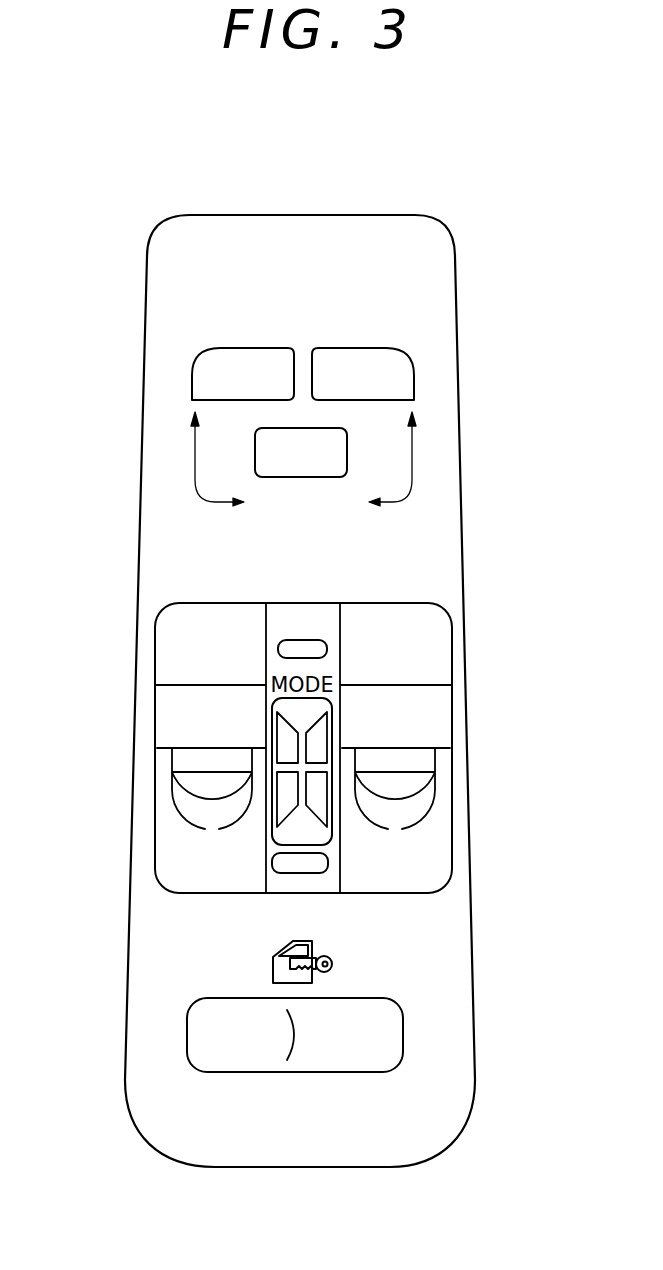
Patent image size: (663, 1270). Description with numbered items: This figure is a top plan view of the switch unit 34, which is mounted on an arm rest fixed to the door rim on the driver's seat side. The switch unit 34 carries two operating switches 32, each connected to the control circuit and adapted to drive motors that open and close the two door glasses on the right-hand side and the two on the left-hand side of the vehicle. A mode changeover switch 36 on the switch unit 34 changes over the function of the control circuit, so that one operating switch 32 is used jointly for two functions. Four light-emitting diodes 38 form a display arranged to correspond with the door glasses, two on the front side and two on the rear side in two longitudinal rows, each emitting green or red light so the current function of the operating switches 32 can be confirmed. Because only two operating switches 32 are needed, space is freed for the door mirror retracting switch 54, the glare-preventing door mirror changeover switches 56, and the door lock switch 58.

The switch unit 34 is at (168, 224).
The door mirror changeover switches 56 is at (217, 347).
The door mirror retracting switch 54 is at (345, 462).
The mode changeover switch 36 is at (310, 640).
The light-emitting diodes 38 is at (283, 737).
The operating switches 32 is at (172, 862).
The door lock switch 58 is at (315, 1063).